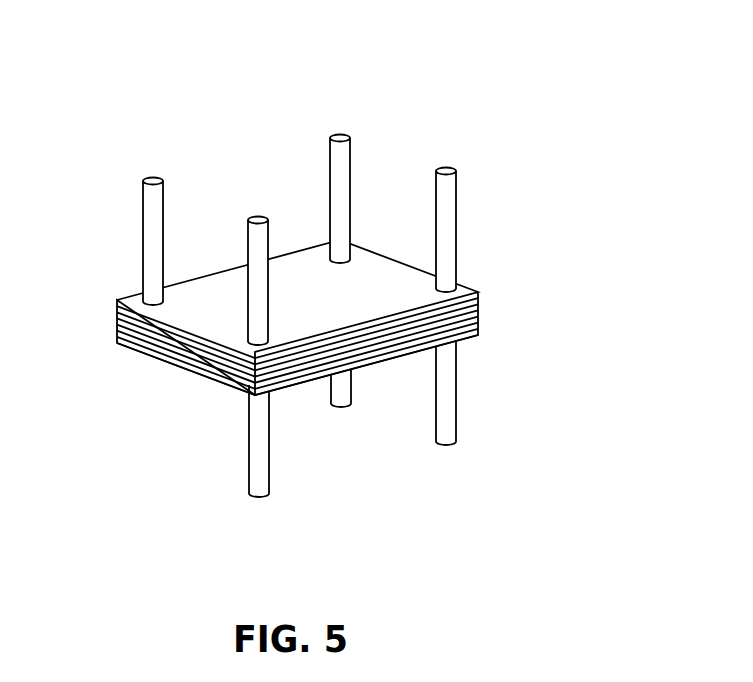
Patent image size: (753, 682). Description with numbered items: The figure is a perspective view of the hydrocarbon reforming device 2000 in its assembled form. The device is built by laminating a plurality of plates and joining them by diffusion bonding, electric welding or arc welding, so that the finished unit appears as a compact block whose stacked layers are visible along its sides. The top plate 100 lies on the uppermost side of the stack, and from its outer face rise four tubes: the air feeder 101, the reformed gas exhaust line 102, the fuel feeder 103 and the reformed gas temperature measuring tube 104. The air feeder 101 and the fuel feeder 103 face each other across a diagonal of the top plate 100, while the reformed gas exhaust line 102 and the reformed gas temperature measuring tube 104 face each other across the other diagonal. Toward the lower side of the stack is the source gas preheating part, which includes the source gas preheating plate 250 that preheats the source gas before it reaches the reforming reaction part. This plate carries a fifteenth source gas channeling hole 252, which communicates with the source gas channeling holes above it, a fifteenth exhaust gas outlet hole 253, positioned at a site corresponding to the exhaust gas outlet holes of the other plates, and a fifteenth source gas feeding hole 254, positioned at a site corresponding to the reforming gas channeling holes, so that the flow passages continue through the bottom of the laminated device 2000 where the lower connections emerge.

The hydrocarbon reforming device 2000 is at (418, 50).
The top plate 100 is at (297, 325).
The air feeder 101 is at (155, 178).
The reformed gas exhaust line 102 is at (258, 218).
The fuel feeder 103 is at (442, 165).
The reformed gas temperature measuring tube 104 is at (330, 137).
The source gas preheating plate 250 is at (297, 386).
The fifteenth source gas channeling hole 252 is at (258, 500).
The fifteenth exhaust gas outlet hole 253 is at (443, 450).
The fifteenth source gas feeding hole 254 is at (340, 412).